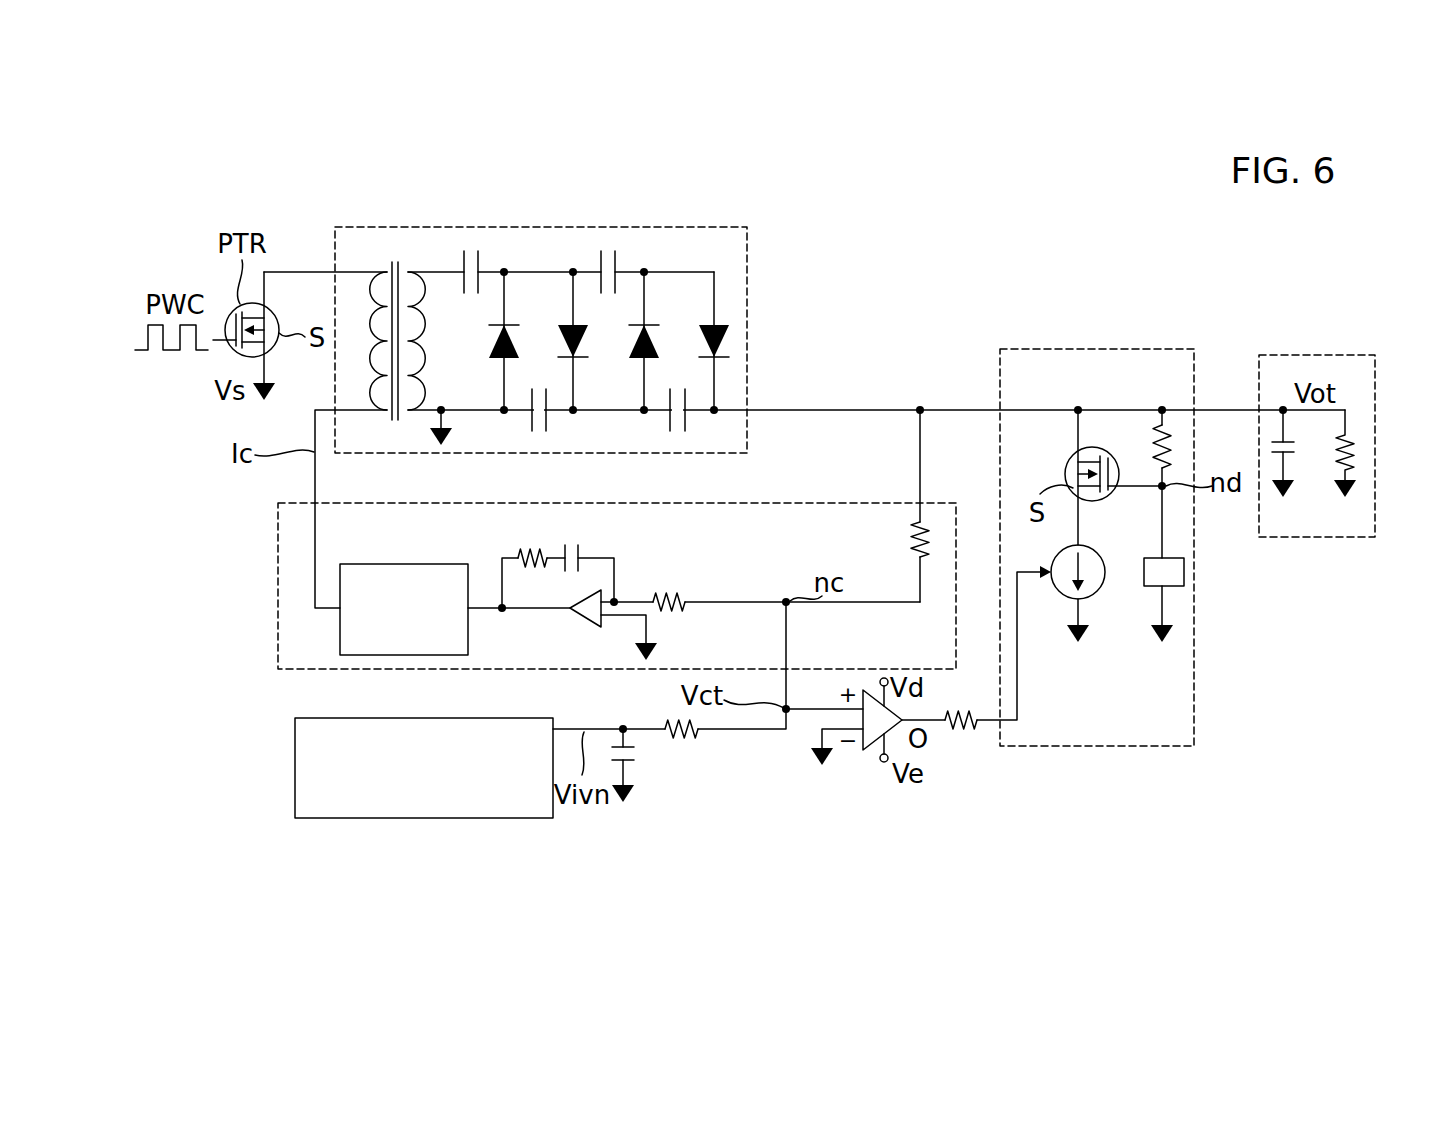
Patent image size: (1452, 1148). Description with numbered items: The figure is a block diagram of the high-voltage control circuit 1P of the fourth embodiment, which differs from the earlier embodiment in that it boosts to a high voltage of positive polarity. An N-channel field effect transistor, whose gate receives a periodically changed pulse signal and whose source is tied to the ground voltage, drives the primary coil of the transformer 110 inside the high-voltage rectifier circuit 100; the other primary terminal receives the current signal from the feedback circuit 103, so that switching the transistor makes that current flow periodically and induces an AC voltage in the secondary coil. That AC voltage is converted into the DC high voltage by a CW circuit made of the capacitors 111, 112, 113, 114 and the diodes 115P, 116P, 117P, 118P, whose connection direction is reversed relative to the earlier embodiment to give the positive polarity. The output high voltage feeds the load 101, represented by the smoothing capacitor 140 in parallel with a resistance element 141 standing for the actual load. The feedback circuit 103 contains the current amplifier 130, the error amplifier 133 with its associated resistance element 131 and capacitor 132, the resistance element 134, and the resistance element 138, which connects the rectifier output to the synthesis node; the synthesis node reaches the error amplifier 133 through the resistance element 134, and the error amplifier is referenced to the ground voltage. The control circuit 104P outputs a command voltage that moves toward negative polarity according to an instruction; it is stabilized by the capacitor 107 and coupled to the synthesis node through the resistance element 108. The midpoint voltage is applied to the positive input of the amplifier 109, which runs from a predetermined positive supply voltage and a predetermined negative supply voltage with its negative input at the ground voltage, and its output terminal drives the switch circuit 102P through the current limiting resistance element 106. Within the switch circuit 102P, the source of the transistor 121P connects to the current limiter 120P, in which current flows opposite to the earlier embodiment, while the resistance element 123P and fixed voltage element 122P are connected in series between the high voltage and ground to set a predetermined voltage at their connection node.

The high-voltage control circuit 1P is at (932, 256).
The high-voltage rectifier circuit 100 is at (747, 248).
The load 101 is at (1304, 355).
The switch circuit 102P is at (1097, 349).
The feedback circuit 103 is at (277, 518).
The control circuit 104P is at (295, 770).
The current limiting resistance element 106 is at (977, 732).
The capacitor 107 is at (640, 743).
The resistance element 108 is at (697, 743).
The amplifier 109 is at (868, 753).
The transformer 110 is at (395, 262).
The capacitor 111 is at (473, 250).
The capacitor 112 is at (607, 250).
The capacitor 113 is at (538, 428).
The capacitor 114 is at (676, 428).
The diode 115P is at (515, 332).
The diode 116P is at (582, 352).
The diode 117P is at (652, 330).
The diode 118P is at (724, 322).
The current limiter 120P is at (1101, 585).
The transistor 121P is at (1115, 493).
The fixed voltage element 122P is at (1186, 580).
The resistance element 123P is at (1170, 452).
The current amplifier 130 is at (340, 636).
The resistance element 131 is at (518, 552).
The capacitor 132 is at (582, 548).
The error amplifier 133 is at (584, 620).
The resistance element 134 is at (678, 590).
The resistance element 138 is at (908, 552).
The smoothing capacitor 140 is at (1298, 452).
The resistance element 141 is at (1355, 455).